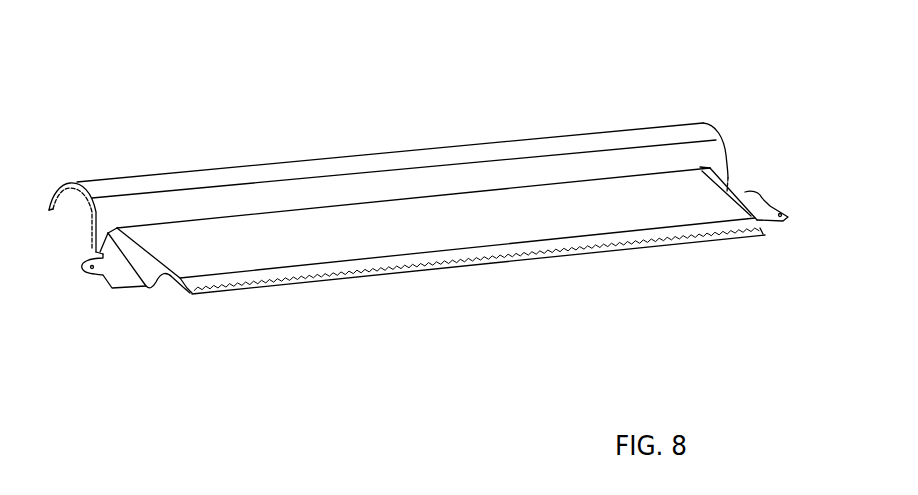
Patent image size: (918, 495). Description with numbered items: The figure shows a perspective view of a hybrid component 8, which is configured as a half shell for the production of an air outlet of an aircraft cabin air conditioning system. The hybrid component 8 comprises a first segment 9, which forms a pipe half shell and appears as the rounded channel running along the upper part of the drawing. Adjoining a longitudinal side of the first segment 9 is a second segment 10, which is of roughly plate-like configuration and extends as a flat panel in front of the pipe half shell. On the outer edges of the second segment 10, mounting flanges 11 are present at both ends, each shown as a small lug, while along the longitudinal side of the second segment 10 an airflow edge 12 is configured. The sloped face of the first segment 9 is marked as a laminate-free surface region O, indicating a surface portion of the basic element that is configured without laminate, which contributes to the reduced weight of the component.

The hybrid component 8 is at (225, 130).
The first segment 9 is at (478, 148).
The laminate-free surface region O is at (260, 196).
The second segment 10 is at (363, 242).
The mounting flange 11 is at (120, 280).
The airflow edge 12 is at (247, 287).